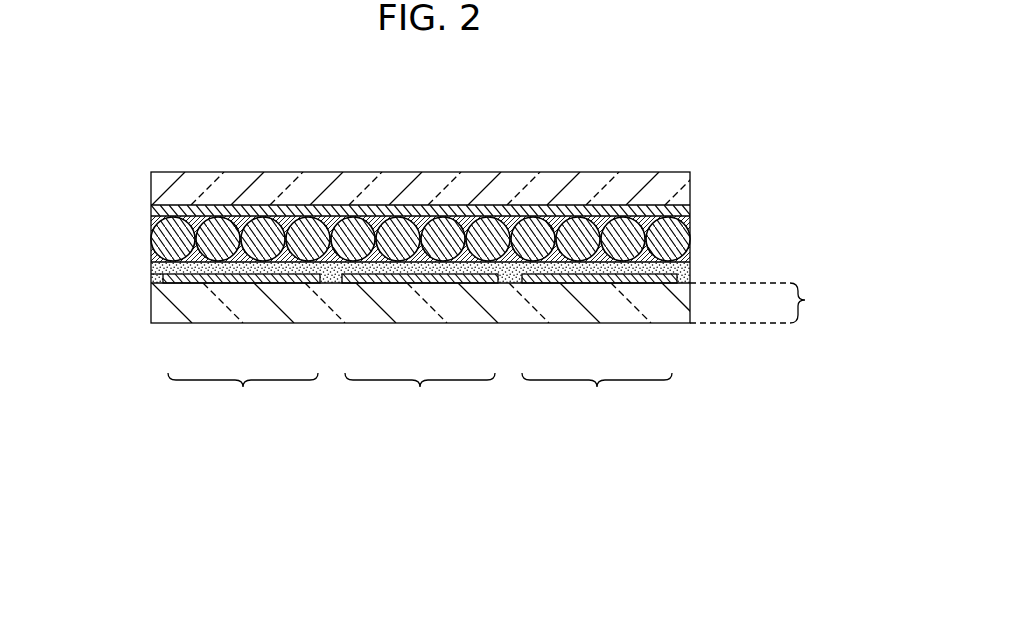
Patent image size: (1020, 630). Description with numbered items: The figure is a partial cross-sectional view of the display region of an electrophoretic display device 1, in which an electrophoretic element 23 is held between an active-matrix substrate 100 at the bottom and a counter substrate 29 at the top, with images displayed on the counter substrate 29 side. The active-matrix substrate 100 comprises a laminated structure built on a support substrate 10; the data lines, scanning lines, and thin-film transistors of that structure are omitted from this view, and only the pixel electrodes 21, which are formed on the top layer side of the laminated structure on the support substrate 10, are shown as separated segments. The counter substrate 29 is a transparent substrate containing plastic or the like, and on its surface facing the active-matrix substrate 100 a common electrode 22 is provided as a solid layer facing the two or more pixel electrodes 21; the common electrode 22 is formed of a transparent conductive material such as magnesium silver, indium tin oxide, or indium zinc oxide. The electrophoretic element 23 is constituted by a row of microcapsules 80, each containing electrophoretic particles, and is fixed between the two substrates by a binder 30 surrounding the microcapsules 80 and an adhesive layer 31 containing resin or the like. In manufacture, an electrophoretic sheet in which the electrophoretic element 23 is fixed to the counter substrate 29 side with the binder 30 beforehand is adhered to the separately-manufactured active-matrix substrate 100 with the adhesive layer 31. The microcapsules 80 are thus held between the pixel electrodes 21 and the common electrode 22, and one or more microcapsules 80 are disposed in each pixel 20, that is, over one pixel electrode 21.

The electrophoretic display device 1 is at (517, 99).
The support substrate 10 is at (688, 299).
The pixel 20 is at (420, 396).
The pixel electrode 21 is at (279, 276).
The common electrode 22 is at (690, 213).
The electrophoretic element 23 is at (131, 263).
The counter substrate 29 is at (681, 182).
The binder 30 is at (690, 255).
The adhesive layer 31 is at (690, 266).
The microcapsule 80 is at (165, 236).
The active-matrix substrate 100 is at (765, 303).